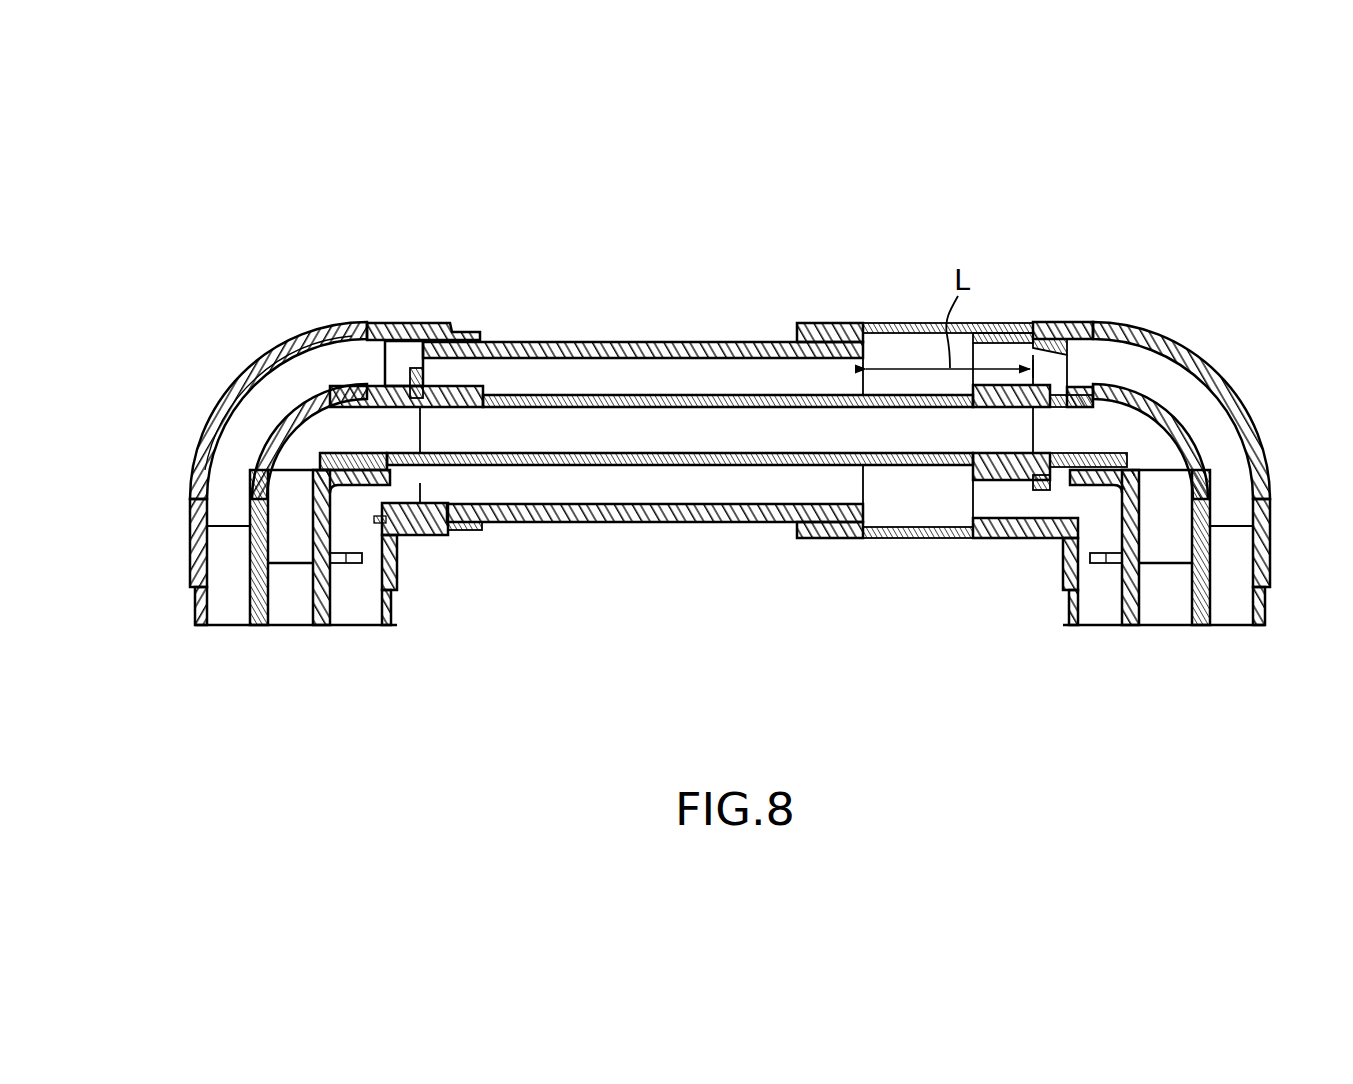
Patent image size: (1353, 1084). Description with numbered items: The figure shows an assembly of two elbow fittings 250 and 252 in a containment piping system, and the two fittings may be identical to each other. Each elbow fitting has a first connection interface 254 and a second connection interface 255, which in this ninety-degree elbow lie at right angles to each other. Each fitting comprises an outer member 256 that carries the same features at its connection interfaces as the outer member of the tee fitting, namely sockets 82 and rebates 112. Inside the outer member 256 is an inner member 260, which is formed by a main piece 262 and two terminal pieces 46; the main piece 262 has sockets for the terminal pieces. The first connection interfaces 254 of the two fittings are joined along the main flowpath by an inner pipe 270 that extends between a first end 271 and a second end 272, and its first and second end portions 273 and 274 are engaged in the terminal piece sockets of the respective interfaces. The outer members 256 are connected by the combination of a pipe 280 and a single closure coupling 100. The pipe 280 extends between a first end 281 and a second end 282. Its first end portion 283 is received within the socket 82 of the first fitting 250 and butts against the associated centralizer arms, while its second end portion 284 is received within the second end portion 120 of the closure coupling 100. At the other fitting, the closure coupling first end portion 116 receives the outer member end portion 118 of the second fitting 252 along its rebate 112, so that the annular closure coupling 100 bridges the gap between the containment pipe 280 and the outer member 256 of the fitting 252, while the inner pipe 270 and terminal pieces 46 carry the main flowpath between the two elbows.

The closure coupling 100 is at (913, 316).
The socket 82 is at (418, 341).
The rebate 112 is at (468, 318).
The first end portion 273 is at (478, 393).
The second end portion 284 is at (826, 322).
The closure coupling first end portion 116 is at (990, 322).
The outer member end portion 118 is at (1028, 330).
The elbow fitting 252 is at (1232, 350).
The elbow fitting 250 is at (229, 438).
The outer member 256 is at (274, 358).
The main piece 262 is at (211, 437).
The inner member 260 is at (244, 463).
The first end 271 is at (421, 438).
The second end 272 is at (1033, 438).
The first end 281 is at (428, 495).
The second end 282 is at (866, 486).
The terminal piece 46 is at (254, 538).
The first end portion 283 is at (455, 537).
The pipe 280 is at (602, 523).
The inner pipe 270 is at (682, 466).
The closure coupling second end portion 120 is at (826, 539).
The second end portion 274 is at (1000, 480).
The first connection interface 254 is at (353, 591).
The second connection interface 255 is at (357, 638).